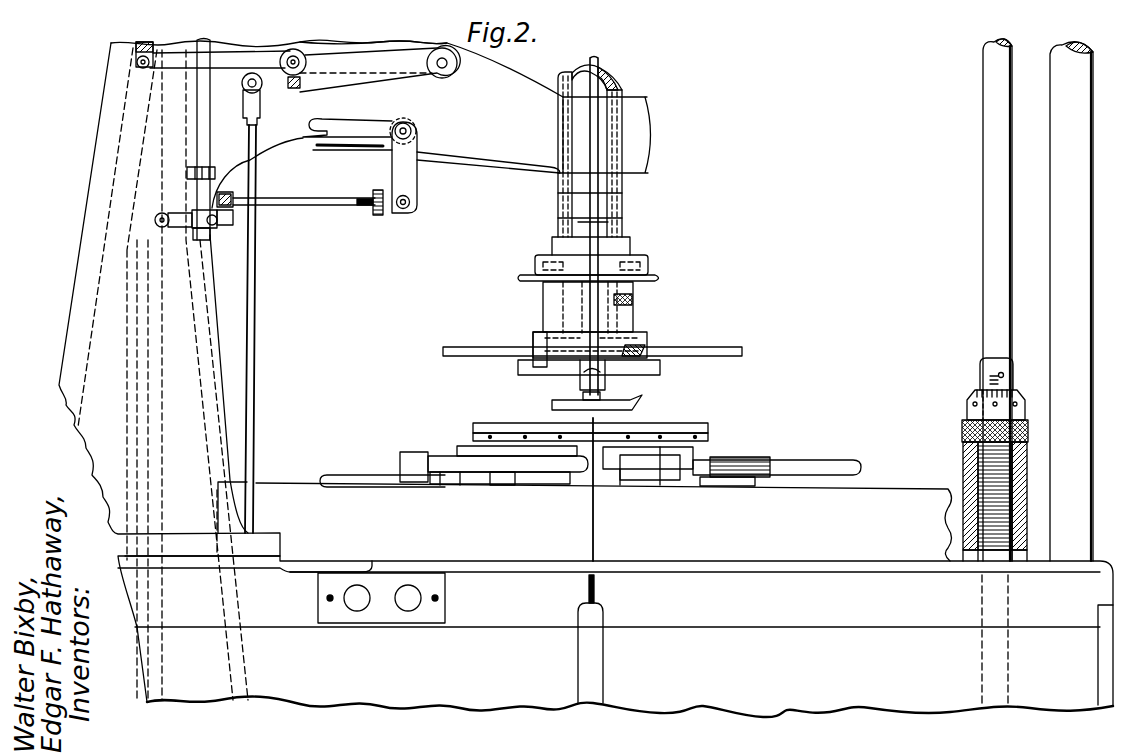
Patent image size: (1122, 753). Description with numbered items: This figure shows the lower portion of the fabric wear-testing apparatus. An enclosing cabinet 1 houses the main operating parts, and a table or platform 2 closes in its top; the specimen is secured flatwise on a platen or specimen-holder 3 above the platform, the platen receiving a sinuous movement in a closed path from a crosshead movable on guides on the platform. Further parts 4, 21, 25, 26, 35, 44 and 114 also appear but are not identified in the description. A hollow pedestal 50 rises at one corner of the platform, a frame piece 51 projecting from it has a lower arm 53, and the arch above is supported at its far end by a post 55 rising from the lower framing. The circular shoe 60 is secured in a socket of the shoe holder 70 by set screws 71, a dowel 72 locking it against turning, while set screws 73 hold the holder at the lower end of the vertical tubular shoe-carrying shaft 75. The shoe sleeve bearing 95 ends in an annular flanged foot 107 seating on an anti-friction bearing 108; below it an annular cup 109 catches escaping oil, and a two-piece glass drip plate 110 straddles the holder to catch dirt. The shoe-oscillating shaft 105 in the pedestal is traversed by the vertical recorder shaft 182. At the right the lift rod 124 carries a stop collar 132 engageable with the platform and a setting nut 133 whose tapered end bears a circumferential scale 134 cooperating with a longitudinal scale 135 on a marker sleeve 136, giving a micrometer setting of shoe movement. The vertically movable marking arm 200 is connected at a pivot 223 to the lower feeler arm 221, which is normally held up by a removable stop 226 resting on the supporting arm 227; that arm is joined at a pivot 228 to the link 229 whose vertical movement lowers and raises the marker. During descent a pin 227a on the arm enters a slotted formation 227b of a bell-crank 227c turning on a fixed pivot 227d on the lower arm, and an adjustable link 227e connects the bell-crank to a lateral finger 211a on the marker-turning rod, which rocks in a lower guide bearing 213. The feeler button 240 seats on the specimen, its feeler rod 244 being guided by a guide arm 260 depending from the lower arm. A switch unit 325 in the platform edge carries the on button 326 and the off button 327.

The cabinet 1 is at (797, 693).
The platform 2 is at (796, 607).
The platen 3 is at (698, 428).
The bed plate 4 is at (876, 494).
The slide 21 is at (561, 482).
The guide block 25 is at (410, 455).
The slide bar 26 is at (485, 482).
The feed bar 35 is at (355, 480).
The carriage plate 44 is at (473, 432).
The hollow pedestal 50 is at (70, 265).
The frame piece 51 is at (338, 47).
The lower arm 53 is at (648, 130).
The post 55 is at (1060, 125).
The shoe 60 is at (662, 368).
The shoe holder 70 is at (634, 322).
The set screws 71 is at (646, 347).
The dowel 72 is at (536, 347).
The set screws 73 is at (634, 303).
The shoe-carrying shaft 75 is at (606, 75).
The shoe sleeve bearing 95 is at (624, 205).
The shoe-oscillating shaft 105 is at (128, 316).
The flanged foot 107 is at (546, 252).
The anti-friction bearing 108 is at (534, 265).
The annular cup 109 is at (656, 275).
The drip plate 110 is at (465, 356).
The slide plate 114 is at (572, 350).
The lift rod 124 is at (986, 222).
The stop collar 132 is at (963, 478).
The setting nut 133 is at (962, 421).
The circumferential scale 134 is at (985, 382).
The longitudinal scale 135 is at (994, 371).
The marker sleeve 136 is at (1009, 369).
The recorder shaft 182 is at (141, 348).
The marking arm 200 is at (140, 42).
The lateral finger 211a is at (230, 224).
The lower guide bearing 213 is at (216, 173).
The lower feeler arm 221 is at (225, 62).
The pivot 223 is at (137, 62).
The removable stop 226 is at (293, 49).
The supporting arm 227 is at (372, 77).
The pin 227a is at (305, 86).
The slotted formation 227b is at (308, 126).
The bell-crank 227c is at (395, 182).
The fixed pivot 227d is at (412, 131).
The adjustable link 227e is at (338, 210).
The pivot 228 is at (245, 90).
The link 229 is at (252, 410).
The feeler button 240 is at (645, 404).
The feeler rod 244 is at (608, 222).
The guide arm 260 is at (560, 200).
The switch unit 325 is at (383, 612).
The on button 326 is at (345, 612).
The off button 327 is at (402, 612).